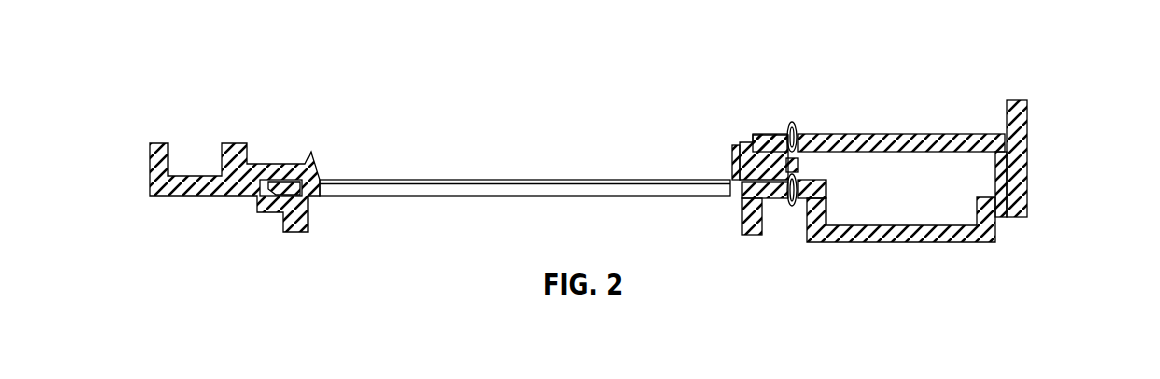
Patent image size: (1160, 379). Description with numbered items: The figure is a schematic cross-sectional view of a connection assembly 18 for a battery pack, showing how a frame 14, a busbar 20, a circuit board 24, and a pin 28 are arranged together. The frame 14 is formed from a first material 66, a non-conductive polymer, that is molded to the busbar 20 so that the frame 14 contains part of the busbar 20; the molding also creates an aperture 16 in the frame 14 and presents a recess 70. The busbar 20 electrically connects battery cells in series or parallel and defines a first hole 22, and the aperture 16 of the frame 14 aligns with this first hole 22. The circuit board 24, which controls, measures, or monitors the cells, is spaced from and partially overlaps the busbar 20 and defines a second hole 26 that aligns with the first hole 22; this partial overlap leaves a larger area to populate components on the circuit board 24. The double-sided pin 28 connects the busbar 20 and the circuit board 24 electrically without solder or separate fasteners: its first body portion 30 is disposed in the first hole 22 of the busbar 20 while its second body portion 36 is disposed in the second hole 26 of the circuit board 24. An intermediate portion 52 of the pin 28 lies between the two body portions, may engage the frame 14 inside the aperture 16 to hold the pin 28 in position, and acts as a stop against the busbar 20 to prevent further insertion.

The frame 14 is at (572, 212).
The first material 66 is at (293, 235).
The aperture 16 is at (760, 147).
The connection assembly 18 is at (930, 78).
The busbar 20 is at (745, 200).
The first hole 22 is at (817, 197).
The circuit board 24 is at (910, 134).
The second hole 26 is at (813, 142).
The pin 28 is at (794, 111).
The first body portion 30 is at (792, 215).
The second body portion 36 is at (796, 124).
The intermediate portion 52 is at (800, 167).
The recess 70 is at (958, 175).